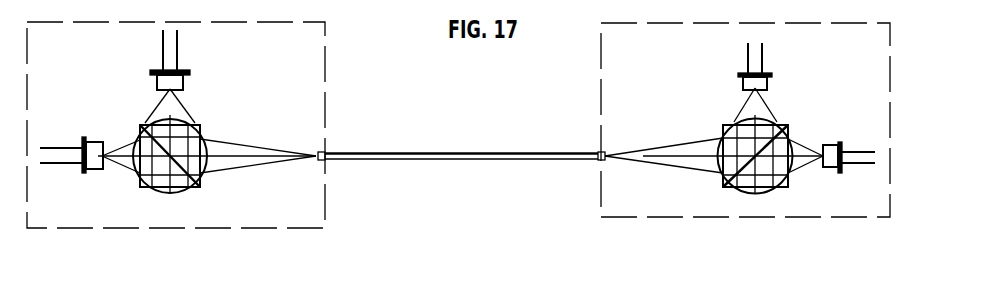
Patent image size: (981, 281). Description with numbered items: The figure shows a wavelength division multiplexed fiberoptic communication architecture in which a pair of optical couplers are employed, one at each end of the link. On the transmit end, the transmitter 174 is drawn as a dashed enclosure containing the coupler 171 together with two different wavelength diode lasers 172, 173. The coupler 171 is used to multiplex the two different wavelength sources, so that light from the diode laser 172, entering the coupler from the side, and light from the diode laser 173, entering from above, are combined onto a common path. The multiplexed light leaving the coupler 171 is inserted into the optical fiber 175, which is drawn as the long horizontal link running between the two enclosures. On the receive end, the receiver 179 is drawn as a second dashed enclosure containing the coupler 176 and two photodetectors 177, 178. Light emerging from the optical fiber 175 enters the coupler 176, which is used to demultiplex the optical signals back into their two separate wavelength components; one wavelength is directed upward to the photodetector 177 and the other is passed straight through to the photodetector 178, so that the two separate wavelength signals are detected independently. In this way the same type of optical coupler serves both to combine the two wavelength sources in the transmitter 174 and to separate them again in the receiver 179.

The coupler 171 is at (187, 189).
The diode laser 172 is at (86, 174).
The diode laser 173 is at (192, 73).
The transmitter 174 is at (325, 95).
The optical fiber 175 is at (471, 160).
The coupler 176 is at (727, 189).
The photodetector 177 is at (767, 82).
The photodetector 178 is at (832, 174).
The receiver 179 is at (601, 95).